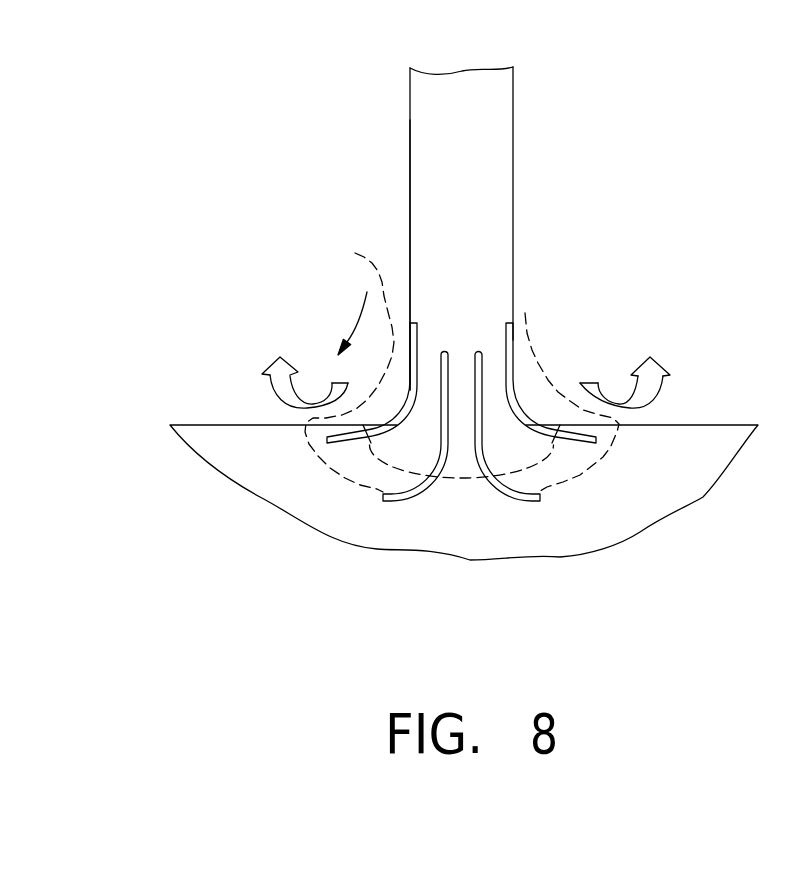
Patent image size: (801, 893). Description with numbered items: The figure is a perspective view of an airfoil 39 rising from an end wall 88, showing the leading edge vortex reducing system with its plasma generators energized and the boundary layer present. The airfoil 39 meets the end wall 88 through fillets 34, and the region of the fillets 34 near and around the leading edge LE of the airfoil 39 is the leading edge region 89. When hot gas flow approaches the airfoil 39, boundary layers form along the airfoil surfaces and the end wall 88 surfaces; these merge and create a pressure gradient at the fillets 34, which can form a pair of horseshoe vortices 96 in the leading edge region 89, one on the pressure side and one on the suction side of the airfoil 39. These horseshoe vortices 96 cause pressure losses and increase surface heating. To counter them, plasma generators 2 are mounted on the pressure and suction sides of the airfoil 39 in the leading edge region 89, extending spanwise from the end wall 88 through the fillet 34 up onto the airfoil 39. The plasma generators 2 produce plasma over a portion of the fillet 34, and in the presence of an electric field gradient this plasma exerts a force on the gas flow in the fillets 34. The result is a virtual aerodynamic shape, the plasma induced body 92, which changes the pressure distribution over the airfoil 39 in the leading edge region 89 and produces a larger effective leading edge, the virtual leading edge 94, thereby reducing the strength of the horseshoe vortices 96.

The leading edge LE is at (462, 167).
The airfoil 39 is at (409, 197).
The plasma generator 2 is at (512, 340).
The fillet 34 is at (520, 416).
The end wall 88 is at (210, 423).
The leading edge region 89 is at (349, 366).
The horseshoe vortices 96 is at (667, 372).
The virtual leading edge 94 is at (347, 478).
The plasma induced body 92 is at (542, 493).